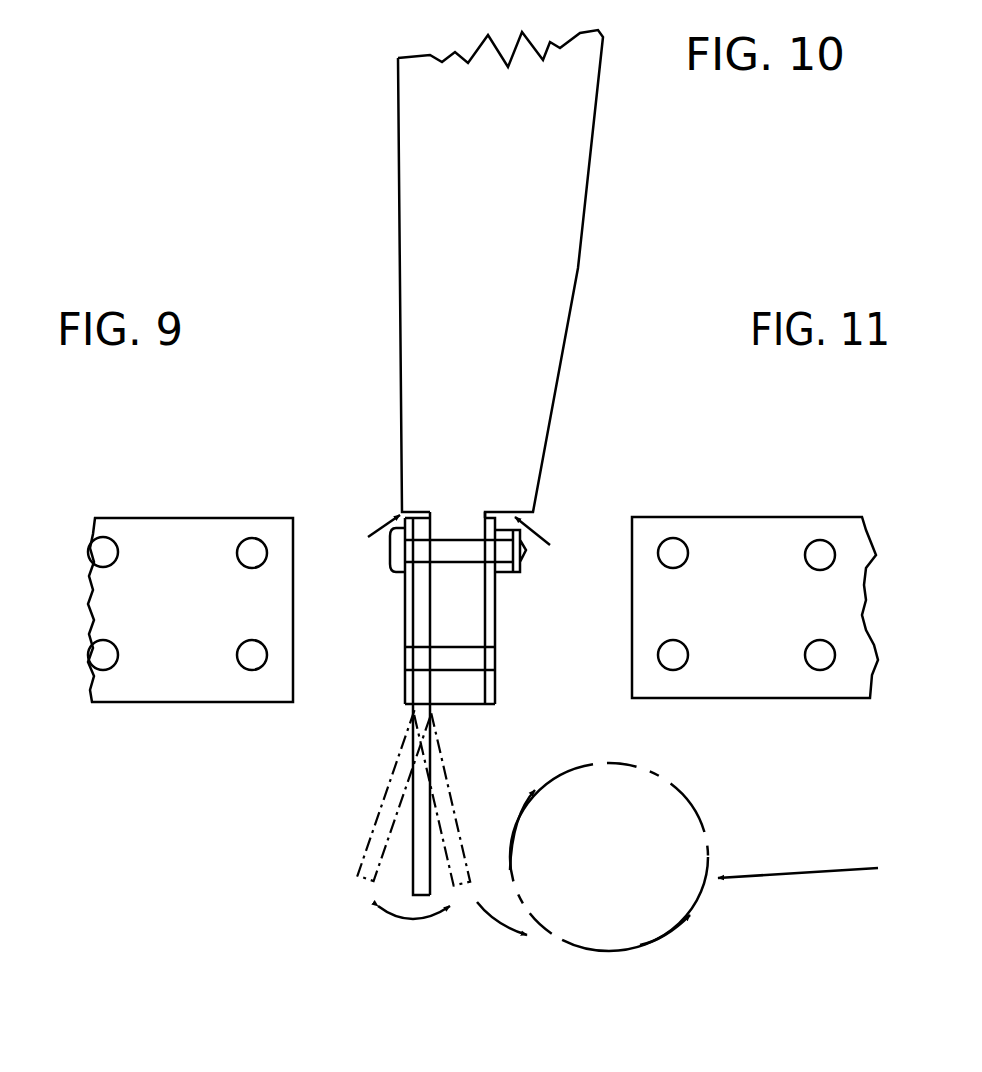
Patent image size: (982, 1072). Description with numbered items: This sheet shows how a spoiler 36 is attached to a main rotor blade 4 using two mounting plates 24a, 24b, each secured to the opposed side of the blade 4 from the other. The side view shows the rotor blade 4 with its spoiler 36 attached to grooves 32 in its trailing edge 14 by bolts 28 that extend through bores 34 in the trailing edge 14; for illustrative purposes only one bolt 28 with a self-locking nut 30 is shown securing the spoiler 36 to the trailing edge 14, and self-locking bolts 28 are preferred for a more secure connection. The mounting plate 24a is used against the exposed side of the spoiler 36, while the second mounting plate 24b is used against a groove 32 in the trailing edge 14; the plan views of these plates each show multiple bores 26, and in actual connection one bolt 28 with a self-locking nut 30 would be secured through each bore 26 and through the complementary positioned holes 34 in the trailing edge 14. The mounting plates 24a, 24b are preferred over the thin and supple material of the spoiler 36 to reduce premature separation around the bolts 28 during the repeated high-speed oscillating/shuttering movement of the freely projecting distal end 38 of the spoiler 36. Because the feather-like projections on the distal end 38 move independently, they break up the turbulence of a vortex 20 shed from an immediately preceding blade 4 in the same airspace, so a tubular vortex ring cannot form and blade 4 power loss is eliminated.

In FIG. 10, the main rotor blade 4 is at (560, 258).
In FIG. 10, the trailing edge 14 is at (468, 615).
In FIG. 10, the vortex 20 is at (605, 903).
In FIG. 9, the mounting plate 24a is at (197, 533).
In FIG. 10, the mounting plate 24a is at (408, 627).
In FIG. 10, the second mounting plate 24b is at (497, 693).
In FIG. 11, the second mounting plate 24b is at (768, 537).
In FIG. 9, the bores 26 is at (252, 550).
In FIG. 11, the bores 26 is at (673, 550).
In FIG. 10, the self-locking bolt 28 is at (448, 552).
In FIG. 10, the self-locking nut 30 is at (503, 572).
In FIG. 10, the grooves 32 is at (459, 543).
In FIG. 10, the bores 34 is at (448, 658).
In FIG. 10, the spoiler 36 is at (427, 723).
In FIG. 10, the distal end 38 is at (392, 832).